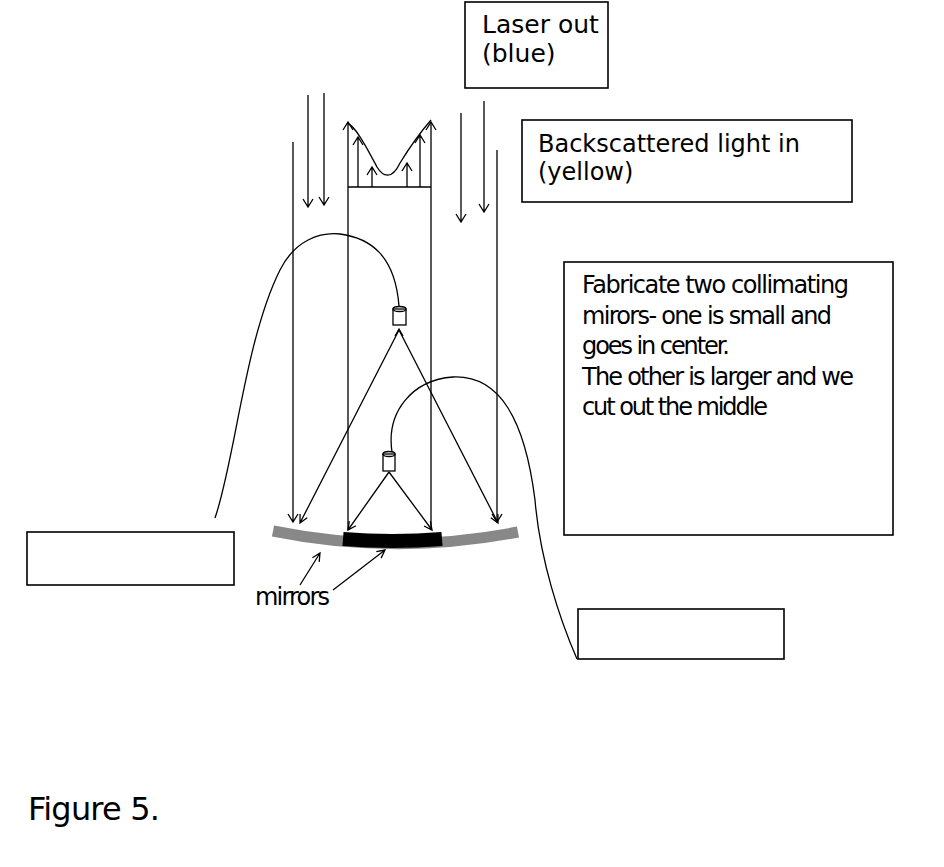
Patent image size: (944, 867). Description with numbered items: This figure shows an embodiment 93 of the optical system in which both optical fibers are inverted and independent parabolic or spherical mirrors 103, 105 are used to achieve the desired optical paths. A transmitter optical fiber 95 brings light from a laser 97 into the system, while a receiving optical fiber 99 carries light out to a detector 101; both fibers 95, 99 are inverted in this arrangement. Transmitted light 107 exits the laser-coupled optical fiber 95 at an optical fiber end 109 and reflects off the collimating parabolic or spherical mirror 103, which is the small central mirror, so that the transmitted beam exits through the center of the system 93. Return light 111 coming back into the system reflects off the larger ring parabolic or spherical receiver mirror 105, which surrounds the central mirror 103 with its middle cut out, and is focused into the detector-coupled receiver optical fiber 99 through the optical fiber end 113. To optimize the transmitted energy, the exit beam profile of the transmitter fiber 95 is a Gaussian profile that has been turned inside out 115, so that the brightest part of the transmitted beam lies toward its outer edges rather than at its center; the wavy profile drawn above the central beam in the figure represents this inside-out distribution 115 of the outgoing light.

The embodiment 93 is at (145, 241).
The transmitter optical fiber 95 is at (547, 592).
The laser 97 is at (678, 662).
The receiving optical fiber 99 is at (247, 417).
The detector 101 is at (82, 587).
The collimating parabolic or spherical mirror 103 is at (417, 553).
The ring parabolic or spherical receiver mirror 105 is at (468, 548).
The transmitted light 107 is at (348, 305).
The optical fiber end 109 is at (395, 462).
The return light 111 is at (293, 180).
The optical fiber end 113 is at (392, 318).
The inside-out beam profile 115 is at (412, 137).